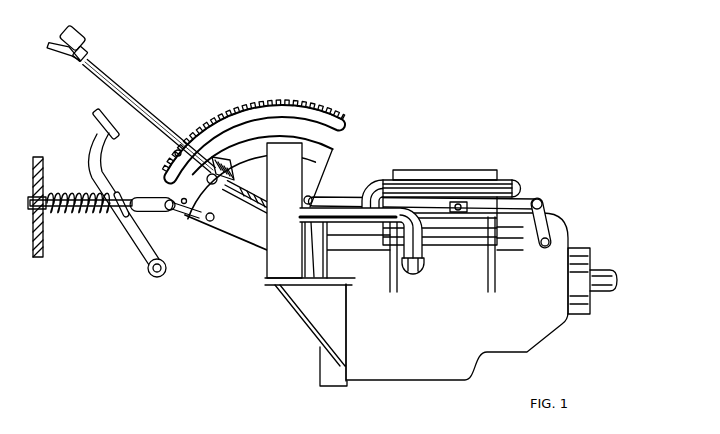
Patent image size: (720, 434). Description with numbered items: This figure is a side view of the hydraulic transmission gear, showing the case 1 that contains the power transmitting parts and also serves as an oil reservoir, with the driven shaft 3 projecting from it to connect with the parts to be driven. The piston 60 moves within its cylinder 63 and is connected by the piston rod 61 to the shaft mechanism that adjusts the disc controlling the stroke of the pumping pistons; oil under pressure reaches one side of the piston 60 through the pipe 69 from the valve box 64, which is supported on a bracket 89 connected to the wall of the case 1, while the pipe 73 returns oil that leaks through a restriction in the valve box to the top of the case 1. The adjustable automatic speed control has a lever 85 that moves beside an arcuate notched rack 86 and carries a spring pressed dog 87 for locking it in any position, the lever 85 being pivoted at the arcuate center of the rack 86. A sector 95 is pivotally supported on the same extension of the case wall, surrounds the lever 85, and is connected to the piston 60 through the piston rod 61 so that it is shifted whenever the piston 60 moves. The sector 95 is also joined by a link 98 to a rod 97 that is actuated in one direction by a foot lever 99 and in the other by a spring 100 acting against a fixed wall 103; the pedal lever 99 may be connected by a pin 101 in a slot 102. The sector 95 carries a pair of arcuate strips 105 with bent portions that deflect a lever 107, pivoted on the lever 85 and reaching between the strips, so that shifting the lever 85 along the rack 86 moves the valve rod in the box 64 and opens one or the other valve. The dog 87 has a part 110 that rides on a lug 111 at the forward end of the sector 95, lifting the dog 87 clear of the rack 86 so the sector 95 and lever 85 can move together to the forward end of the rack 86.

The case 1 is at (555, 228).
The driven shaft 3 is at (607, 277).
The piston 60 is at (443, 228).
The piston rod 61 is at (521, 203).
The cylinder 63 is at (468, 230).
The valve box 64 is at (280, 240).
The pipe 69 is at (383, 222).
The pipe 73 is at (420, 183).
The lever 85 is at (148, 120).
The arcuate notched bar or rack 86 is at (209, 126).
The spring pressed dog 87 is at (175, 153).
The bracket 89 is at (310, 298).
The sector 95 is at (317, 178).
The rod 97 is at (152, 215).
The link 98 is at (188, 220).
The foot lever 99 is at (148, 255).
The spring 100 is at (63, 192).
The pin 101 is at (114, 193).
The slot 102 is at (121, 223).
The wall 103 is at (41, 246).
The arcuate strips 105 is at (320, 158).
The lever 107 is at (226, 190).
The part of dog 110 is at (209, 168).
The lug 111 is at (185, 198).